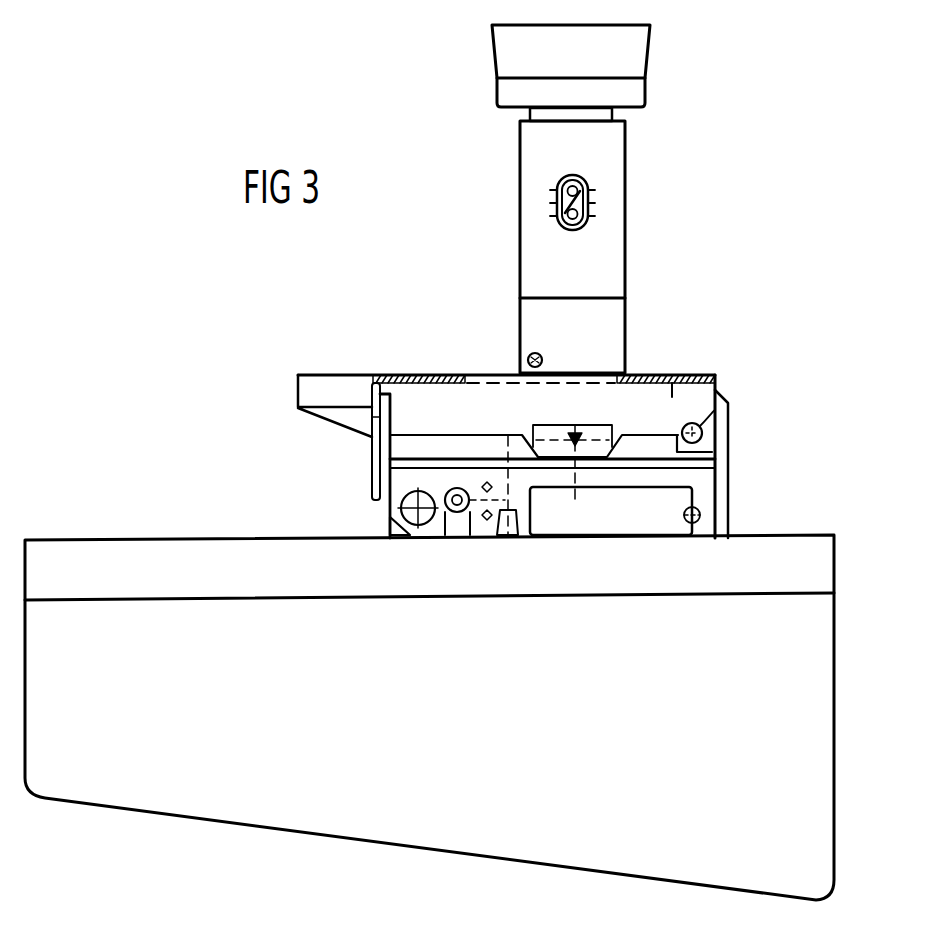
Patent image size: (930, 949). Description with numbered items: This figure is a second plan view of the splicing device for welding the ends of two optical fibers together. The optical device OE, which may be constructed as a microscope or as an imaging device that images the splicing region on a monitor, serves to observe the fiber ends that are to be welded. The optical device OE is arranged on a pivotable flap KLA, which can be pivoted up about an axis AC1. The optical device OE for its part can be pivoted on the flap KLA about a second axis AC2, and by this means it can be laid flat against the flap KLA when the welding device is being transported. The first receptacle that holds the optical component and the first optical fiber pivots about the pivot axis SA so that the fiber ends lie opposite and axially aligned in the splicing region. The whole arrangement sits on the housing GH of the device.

The optical device OE is at (655, 194).
The pivotable flap KLA is at (660, 372).
The axis AC1 is at (697, 425).
The axis AC2 is at (529, 356).
The pivot axis SA is at (392, 524).
The housing GH is at (465, 852).